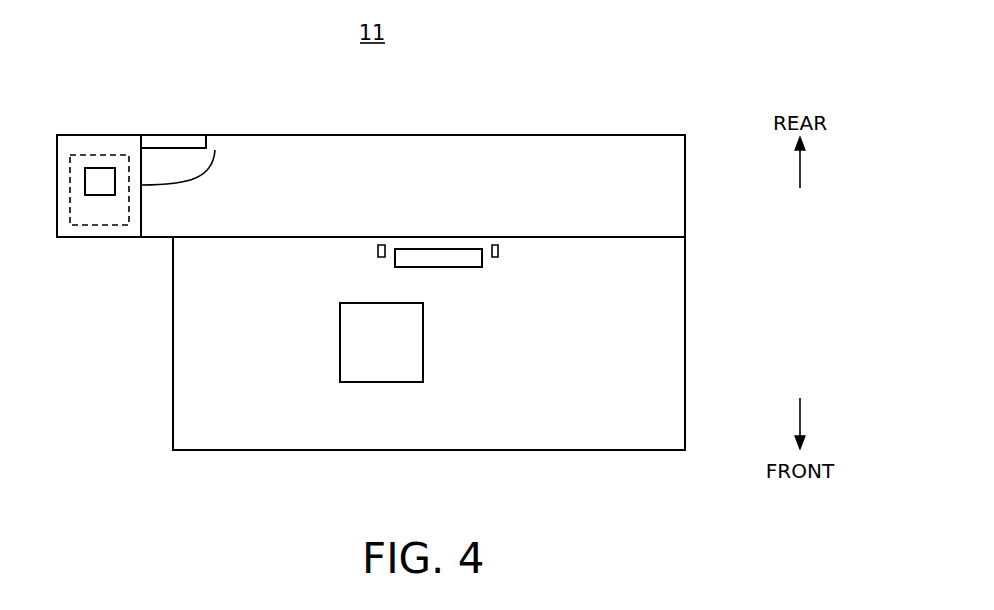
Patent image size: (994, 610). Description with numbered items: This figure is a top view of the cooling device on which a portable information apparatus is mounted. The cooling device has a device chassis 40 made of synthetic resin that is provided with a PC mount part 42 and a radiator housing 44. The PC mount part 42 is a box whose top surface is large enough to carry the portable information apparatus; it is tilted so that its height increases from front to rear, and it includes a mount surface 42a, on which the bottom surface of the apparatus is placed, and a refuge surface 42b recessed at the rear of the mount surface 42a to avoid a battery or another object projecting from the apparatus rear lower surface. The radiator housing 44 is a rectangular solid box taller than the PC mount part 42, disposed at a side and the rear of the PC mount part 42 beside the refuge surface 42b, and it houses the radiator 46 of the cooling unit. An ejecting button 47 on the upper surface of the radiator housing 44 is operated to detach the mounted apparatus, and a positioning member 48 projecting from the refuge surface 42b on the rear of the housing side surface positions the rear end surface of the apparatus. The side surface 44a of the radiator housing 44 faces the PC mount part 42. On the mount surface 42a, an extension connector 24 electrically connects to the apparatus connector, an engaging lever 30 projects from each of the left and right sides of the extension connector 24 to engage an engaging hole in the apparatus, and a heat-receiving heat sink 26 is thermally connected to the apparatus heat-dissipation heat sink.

The extension connector 24 is at (440, 259).
The heat-receiving heat sink 26 is at (382, 373).
The engaging lever 30 is at (383, 244).
The device chassis 40 is at (636, 134).
The PC mount part 42 is at (186, 343).
The mount surface 42a is at (676, 345).
The refuge surface 42b is at (676, 186).
The radiator housing 44 is at (73, 236).
The side surface 44a is at (215, 150).
The radiator 46 is at (100, 228).
The ejecting button 47 is at (101, 173).
The positioning member 48 is at (178, 142).